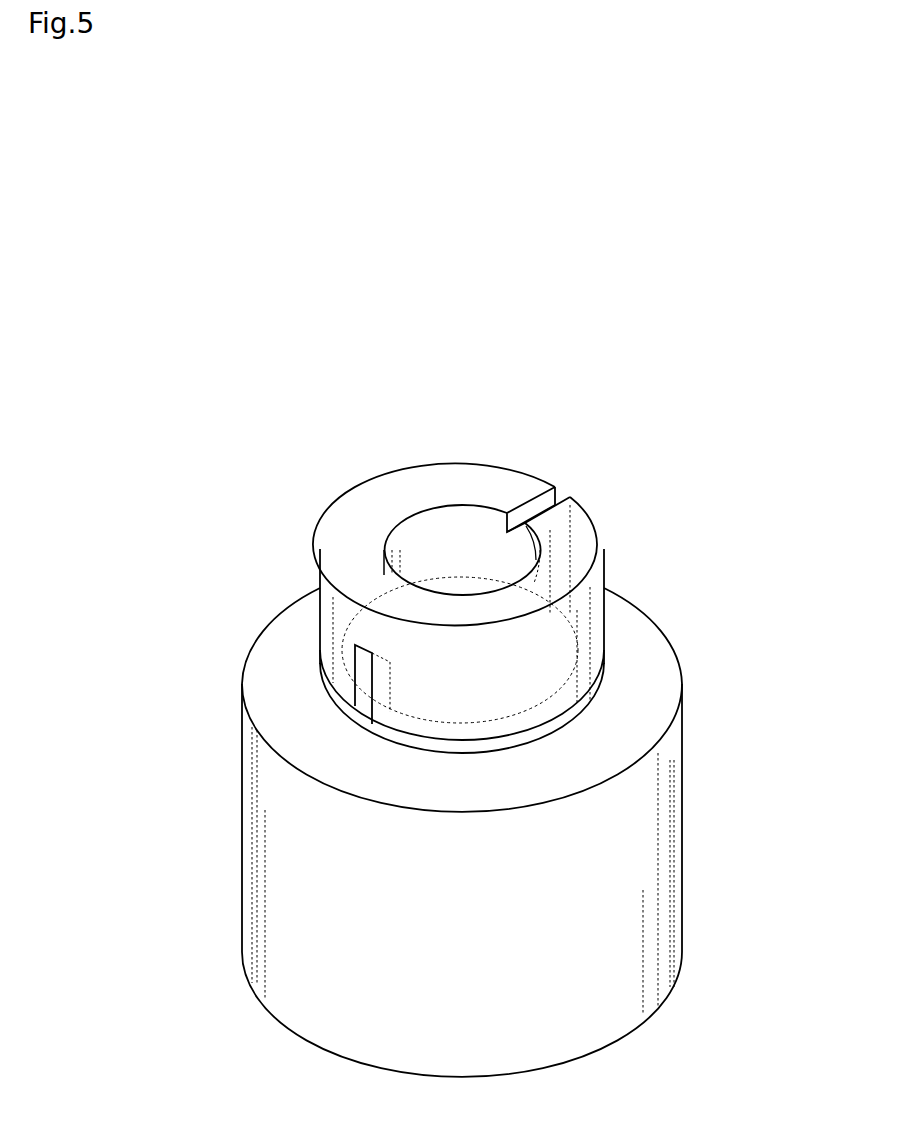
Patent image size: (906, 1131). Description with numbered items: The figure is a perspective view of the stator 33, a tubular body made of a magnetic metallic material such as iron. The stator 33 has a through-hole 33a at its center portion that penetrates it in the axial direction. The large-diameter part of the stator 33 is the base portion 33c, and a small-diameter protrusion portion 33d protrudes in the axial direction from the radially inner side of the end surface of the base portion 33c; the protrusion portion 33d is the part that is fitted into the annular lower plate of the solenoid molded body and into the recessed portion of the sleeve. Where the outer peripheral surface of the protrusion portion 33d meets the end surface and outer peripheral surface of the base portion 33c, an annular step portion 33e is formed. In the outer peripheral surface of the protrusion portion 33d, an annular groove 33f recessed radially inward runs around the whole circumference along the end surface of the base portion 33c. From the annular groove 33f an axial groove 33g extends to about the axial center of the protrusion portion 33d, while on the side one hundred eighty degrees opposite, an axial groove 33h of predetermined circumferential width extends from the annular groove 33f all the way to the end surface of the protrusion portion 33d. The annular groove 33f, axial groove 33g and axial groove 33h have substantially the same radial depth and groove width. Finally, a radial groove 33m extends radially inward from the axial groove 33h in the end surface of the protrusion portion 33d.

The stator 33 is at (591, 396).
The through-hole 33a is at (424, 528).
The base portion 33c is at (662, 888).
The protrusion portion 33d is at (607, 618).
The step portion 33e is at (648, 645).
The annular groove 33f is at (540, 745).
The axial groove 33g is at (357, 690).
The axial groove 33h is at (571, 498).
The radial groove 33m is at (522, 522).